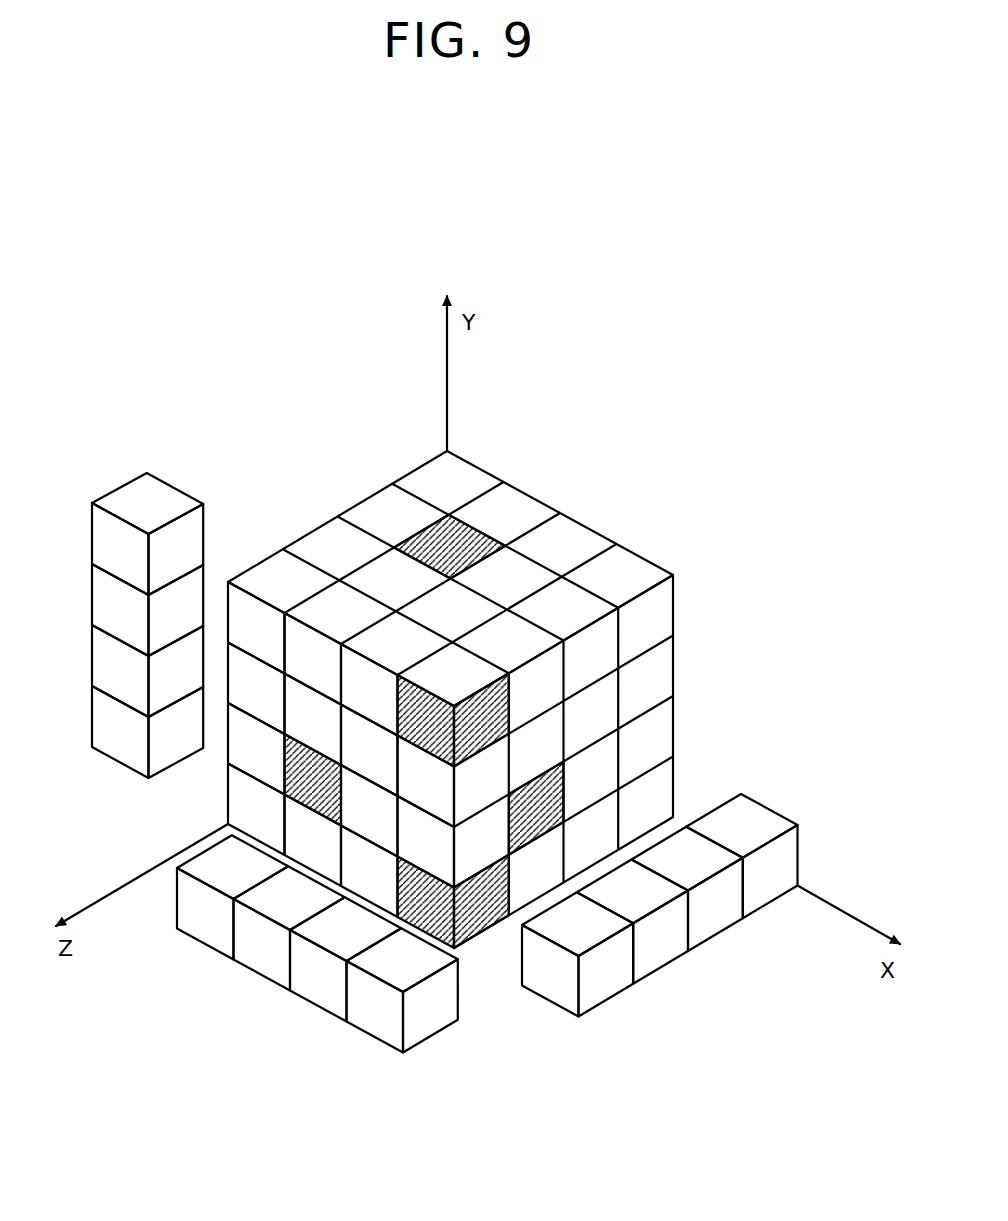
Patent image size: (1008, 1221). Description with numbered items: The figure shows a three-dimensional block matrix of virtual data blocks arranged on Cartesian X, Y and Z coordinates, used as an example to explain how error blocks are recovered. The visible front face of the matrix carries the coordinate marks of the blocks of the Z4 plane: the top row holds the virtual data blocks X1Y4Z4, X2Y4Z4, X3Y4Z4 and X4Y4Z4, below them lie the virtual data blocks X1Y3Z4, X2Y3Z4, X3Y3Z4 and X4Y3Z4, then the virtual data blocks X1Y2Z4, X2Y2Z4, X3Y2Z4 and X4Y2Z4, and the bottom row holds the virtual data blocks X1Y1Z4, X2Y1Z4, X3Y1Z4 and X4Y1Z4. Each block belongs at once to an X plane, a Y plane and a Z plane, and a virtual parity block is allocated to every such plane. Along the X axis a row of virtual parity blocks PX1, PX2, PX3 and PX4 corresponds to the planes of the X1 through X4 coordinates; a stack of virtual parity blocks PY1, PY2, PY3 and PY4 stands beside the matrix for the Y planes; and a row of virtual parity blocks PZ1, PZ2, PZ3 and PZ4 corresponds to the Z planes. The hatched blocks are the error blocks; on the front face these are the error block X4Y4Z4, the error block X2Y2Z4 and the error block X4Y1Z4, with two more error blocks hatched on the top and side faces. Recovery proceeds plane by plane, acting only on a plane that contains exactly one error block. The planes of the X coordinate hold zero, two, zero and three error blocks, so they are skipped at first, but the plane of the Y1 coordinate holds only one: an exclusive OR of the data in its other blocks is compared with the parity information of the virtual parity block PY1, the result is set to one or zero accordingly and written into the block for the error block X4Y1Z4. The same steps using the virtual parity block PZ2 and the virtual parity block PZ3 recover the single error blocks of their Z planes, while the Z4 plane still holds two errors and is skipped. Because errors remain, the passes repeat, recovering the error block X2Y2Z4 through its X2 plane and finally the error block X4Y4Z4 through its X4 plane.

The virtual data block X1Y4Z4 is at (256, 628).
The virtual data block X2Y4Z4 is at (313, 659).
The virtual data block X3Y4Z4 is at (369, 690).
The error block X4Y4Z4 is at (426, 721).
The virtual data block X1Y3Z4 is at (256, 689).
The virtual data block X2Y3Z4 is at (313, 720).
The virtual data block X3Y3Z4 is at (369, 751).
The virtual data block X4Y3Z4 is at (426, 782).
The virtual data block X1Y2Z4 is at (256, 749).
The error block X2Y2Z4 is at (313, 780).
The virtual data block X3Y2Z4 is at (369, 811).
The virtual data block X4Y2Z4 is at (426, 842).
The virtual data block X1Y1Z4 is at (256, 810).
The virtual data block X2Y1Z4 is at (313, 841).
The virtual data block X3Y1Z4 is at (369, 872).
The error block X4Y1Z4 is at (426, 903).
The virtual parity block PX1 is at (232, 897).
The virtual parity block PX2 is at (289, 928).
The virtual parity block PX3 is at (345, 959).
The virtual parity block PX4 is at (402, 990).
The virtual parity block PY1 is at (147, 732).
The virtual parity block PY2 is at (147, 671).
The virtual parity block PY3 is at (147, 610).
The virtual parity block PY4 is at (147, 534).
The virtual parity block PZ1 is at (741, 856).
The virtual parity block PZ2 is at (687, 889).
The virtual parity block PZ3 is at (632, 922).
The virtual parity block PZ4 is at (577, 954).